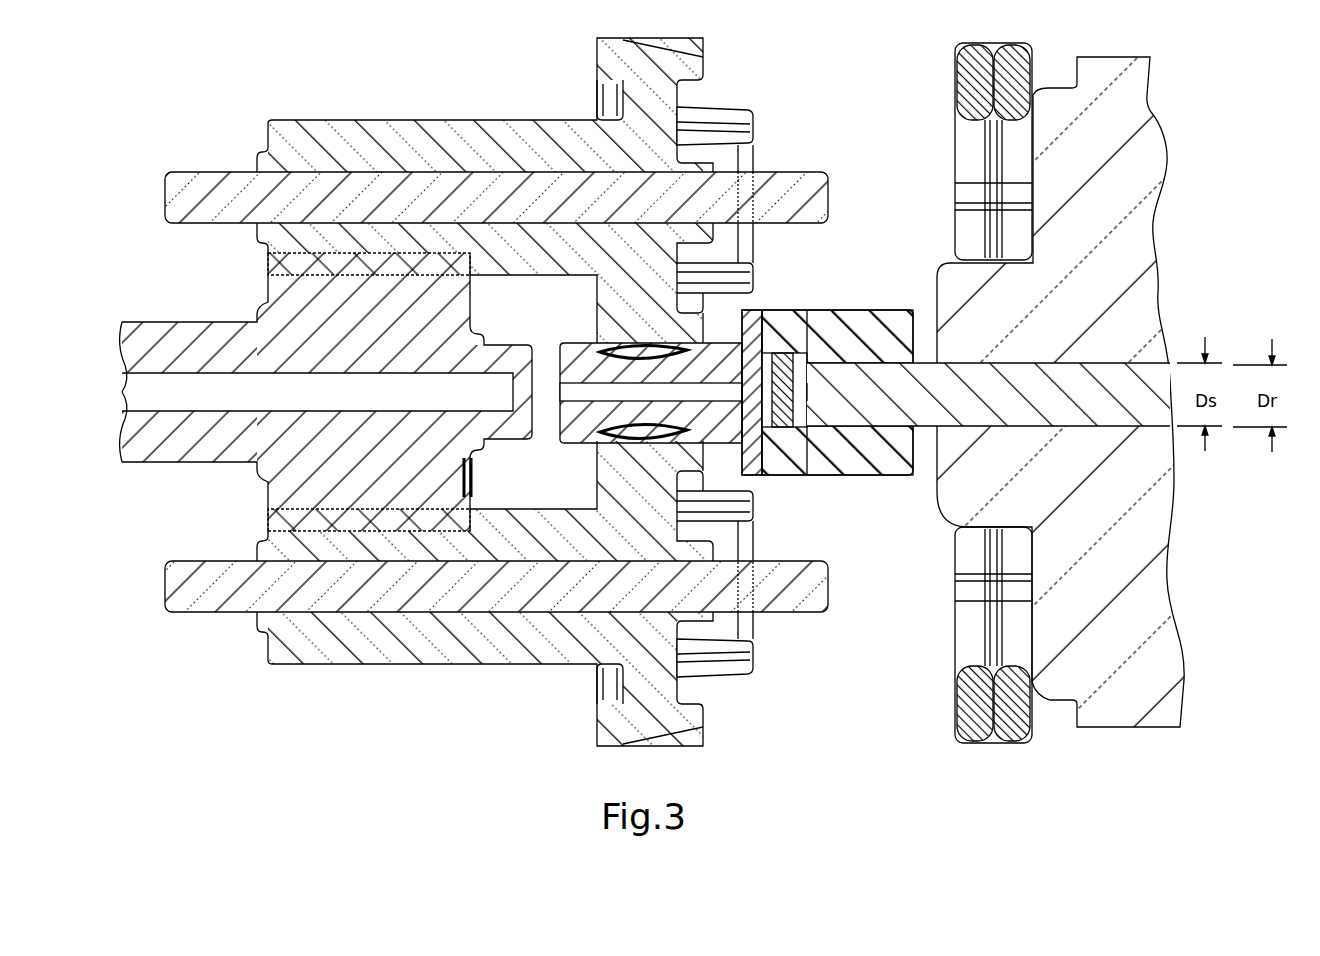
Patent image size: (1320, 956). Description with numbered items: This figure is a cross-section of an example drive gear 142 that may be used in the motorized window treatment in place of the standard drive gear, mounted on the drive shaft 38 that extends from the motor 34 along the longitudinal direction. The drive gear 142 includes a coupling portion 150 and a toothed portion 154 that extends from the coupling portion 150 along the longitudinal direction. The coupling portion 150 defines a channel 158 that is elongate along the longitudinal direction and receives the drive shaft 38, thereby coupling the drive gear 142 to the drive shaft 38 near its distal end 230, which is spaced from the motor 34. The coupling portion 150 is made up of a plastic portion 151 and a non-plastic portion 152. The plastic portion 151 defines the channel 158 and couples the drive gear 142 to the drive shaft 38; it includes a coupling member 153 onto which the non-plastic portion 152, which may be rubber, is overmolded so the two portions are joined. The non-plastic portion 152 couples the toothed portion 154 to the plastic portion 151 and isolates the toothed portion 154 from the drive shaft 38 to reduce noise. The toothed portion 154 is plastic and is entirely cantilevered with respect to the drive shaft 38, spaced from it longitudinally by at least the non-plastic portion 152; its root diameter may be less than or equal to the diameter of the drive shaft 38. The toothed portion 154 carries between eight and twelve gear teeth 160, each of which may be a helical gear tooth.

The motor 34 is at (1107, 262).
The drive shaft 38 is at (883, 403).
The drive gear 142 is at (842, 457).
The coupling portion 150 is at (838, 392).
The plastic portion 151 is at (828, 333).
The non-plastic portion 152 is at (783, 478).
The coupling member 153 is at (751, 342).
The toothed portion 154 is at (560, 353).
The channel 158 is at (897, 340).
The gear teeth 160 is at (688, 437).
The distal end 230 is at (807, 388).